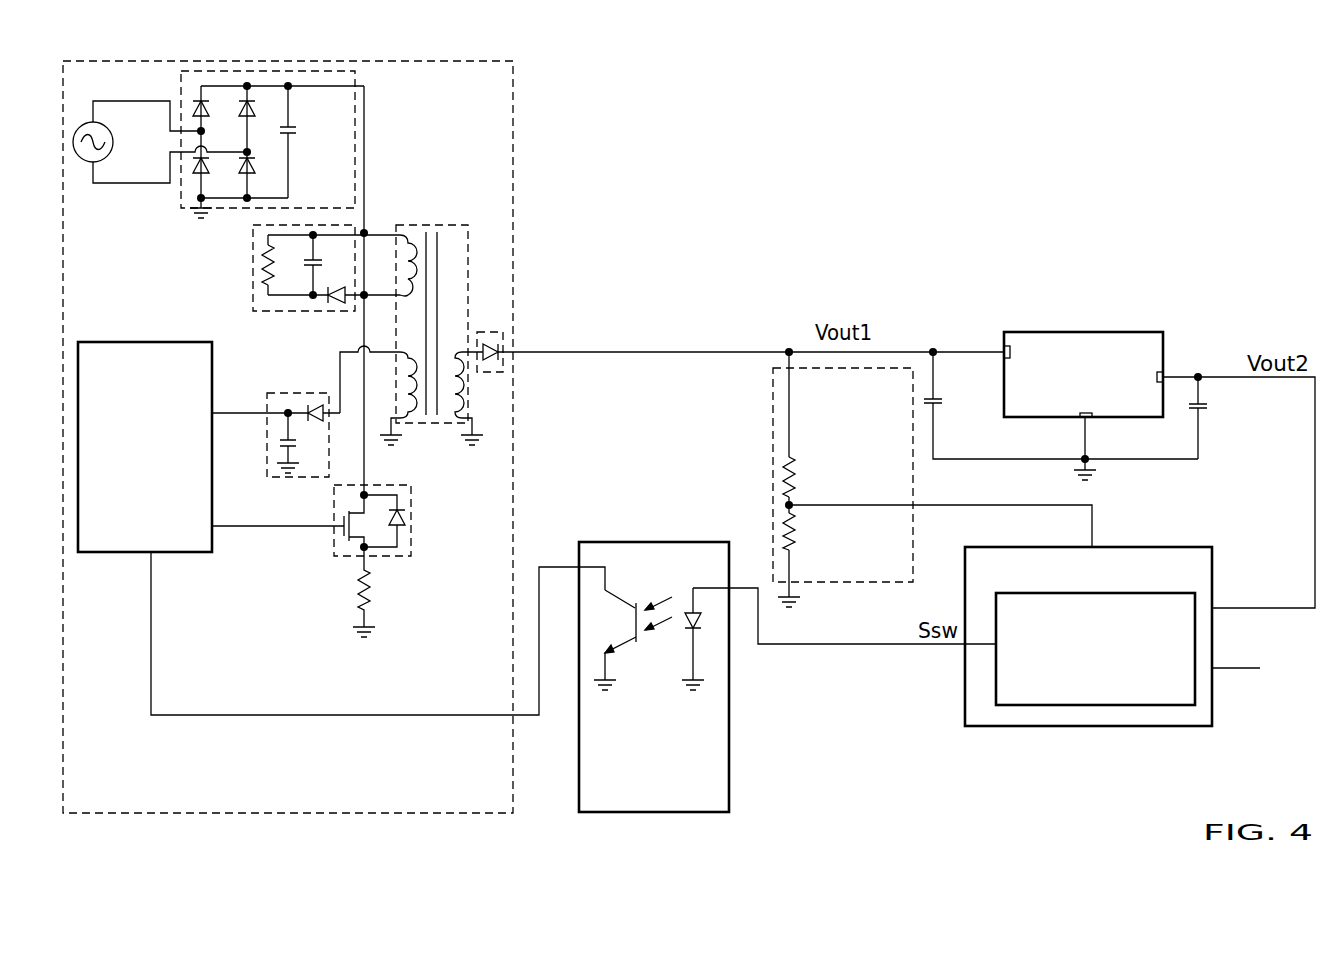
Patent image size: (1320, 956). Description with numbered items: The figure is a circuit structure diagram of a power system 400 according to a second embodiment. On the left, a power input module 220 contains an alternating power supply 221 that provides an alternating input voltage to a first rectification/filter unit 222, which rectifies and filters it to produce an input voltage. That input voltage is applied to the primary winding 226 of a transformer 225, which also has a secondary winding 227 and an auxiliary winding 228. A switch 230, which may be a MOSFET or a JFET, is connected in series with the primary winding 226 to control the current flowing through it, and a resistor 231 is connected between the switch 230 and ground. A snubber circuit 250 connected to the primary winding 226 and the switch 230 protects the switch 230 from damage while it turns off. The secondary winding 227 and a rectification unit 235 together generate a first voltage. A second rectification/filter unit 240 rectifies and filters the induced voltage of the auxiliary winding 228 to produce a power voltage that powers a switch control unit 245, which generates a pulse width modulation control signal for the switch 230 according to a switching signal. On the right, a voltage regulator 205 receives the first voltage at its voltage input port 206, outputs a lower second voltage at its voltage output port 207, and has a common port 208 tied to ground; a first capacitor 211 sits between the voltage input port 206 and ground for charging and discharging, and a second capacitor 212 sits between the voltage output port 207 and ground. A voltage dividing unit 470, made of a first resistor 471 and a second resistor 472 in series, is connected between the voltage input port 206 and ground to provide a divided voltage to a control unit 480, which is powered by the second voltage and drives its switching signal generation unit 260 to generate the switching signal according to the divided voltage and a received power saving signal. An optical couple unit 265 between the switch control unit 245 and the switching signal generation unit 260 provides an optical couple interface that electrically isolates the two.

The power system 400 is at (1141, 116).
The power input module 220 is at (513, 100).
The alternating power supply 221 is at (96, 122).
The first rectification/filter unit 222 is at (272, 71).
The transformer 225 is at (468, 253).
The primary winding 226 is at (386, 230).
The secondary winding 227 is at (453, 422).
The auxiliary winding 228 is at (415, 420).
The snubber circuit 250 is at (253, 278).
The rectification unit 235 is at (500, 332).
The second rectification/filter unit 240 is at (297, 393).
The switch control unit 245 is at (152, 342).
The switch 230 is at (411, 518).
The resistor 231 is at (375, 595).
The optical couple unit 265 is at (647, 542).
The voltage dividing unit 470 is at (957, 493).
The first resistor 471 is at (800, 487).
The second resistor 472 is at (797, 538).
The voltage regulator 205 is at (1105, 375).
The voltage input port 206 is at (1010, 345).
The voltage output port 207 is at (1165, 372).
The common port 208 is at (1095, 417).
The first capacitor 211 is at (940, 400).
The second capacitor 212 is at (1205, 405).
The control unit 480 is at (1133, 666).
The switching signal generation unit 260 is at (1055, 705).